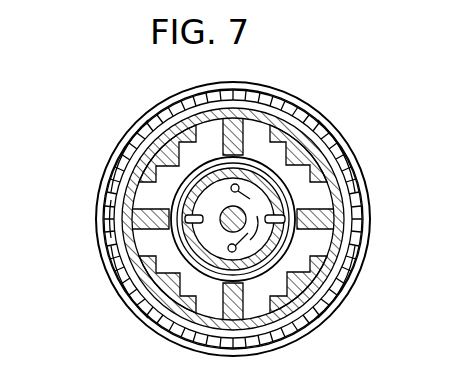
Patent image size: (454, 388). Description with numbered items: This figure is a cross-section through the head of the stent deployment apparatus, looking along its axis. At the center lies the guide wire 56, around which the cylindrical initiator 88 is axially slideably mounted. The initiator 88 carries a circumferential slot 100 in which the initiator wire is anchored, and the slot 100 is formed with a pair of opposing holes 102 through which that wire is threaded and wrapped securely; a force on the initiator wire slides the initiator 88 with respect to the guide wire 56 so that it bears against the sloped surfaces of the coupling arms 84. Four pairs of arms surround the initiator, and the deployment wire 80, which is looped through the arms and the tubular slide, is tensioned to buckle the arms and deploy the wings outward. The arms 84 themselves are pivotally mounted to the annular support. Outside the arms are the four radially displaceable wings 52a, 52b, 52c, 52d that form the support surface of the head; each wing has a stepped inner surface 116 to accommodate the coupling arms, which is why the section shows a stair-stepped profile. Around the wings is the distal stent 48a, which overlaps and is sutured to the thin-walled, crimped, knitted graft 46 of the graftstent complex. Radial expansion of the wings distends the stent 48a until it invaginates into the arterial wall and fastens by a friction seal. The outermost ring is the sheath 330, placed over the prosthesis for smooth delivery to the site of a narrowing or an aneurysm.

The sheath 330 is at (270, 84).
The graft 46 is at (168, 107).
The stepped inner surface 116 is at (213, 118).
The arms 84 is at (272, 121).
The wing 52a is at (315, 125).
The wing 52b is at (345, 276).
The wing 52c is at (164, 326).
The wing 52d is at (123, 144).
The distal stent 48a is at (108, 195).
The opposing holes 102 is at (333, 185).
The circumferential slot 100 is at (350, 237).
The initiator 88 is at (353, 261).
The guide wire 56 is at (220, 214).
The deployment wire 80 is at (265, 208).